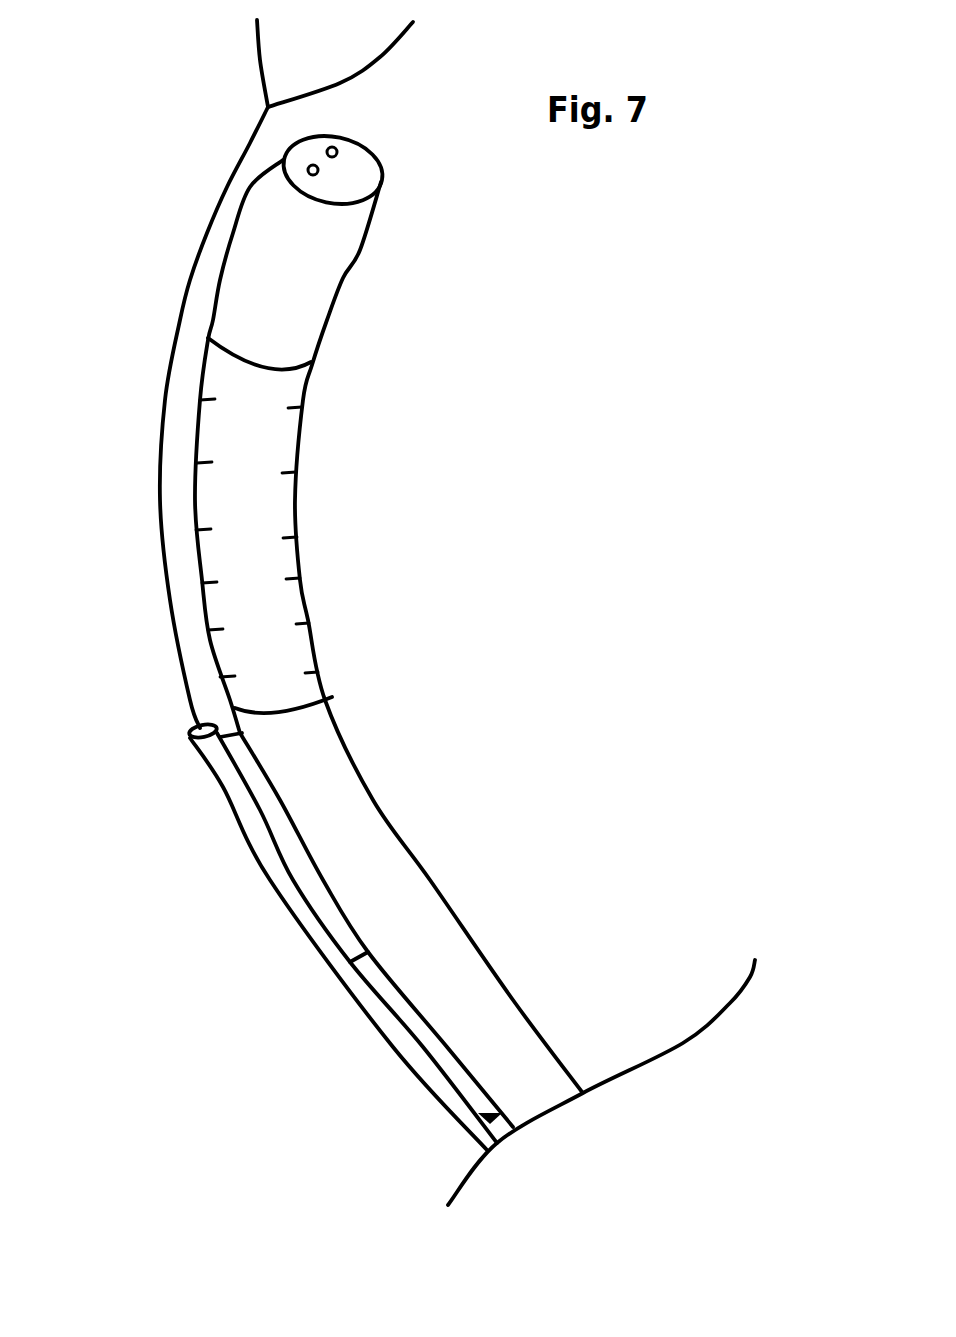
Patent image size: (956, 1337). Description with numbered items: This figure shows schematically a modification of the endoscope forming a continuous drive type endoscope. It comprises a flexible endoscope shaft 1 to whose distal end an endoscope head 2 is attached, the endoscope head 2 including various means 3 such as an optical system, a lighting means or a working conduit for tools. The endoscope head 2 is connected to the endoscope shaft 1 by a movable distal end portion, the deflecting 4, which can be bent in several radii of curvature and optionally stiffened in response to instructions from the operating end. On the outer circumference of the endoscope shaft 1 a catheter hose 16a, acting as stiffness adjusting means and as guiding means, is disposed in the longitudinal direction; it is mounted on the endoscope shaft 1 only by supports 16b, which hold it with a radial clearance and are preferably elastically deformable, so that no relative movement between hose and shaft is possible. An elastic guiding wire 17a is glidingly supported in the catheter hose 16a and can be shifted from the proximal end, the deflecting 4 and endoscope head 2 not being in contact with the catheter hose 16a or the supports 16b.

The endoscope shaft 1 is at (420, 895).
The endoscope head 2 is at (317, 283).
The means 3 is at (308, 168).
The deflecting 4 is at (263, 518).
The catheter hose 16a is at (210, 778).
The supports 16b is at (500, 1113).
The guiding wire 17a is at (197, 260).